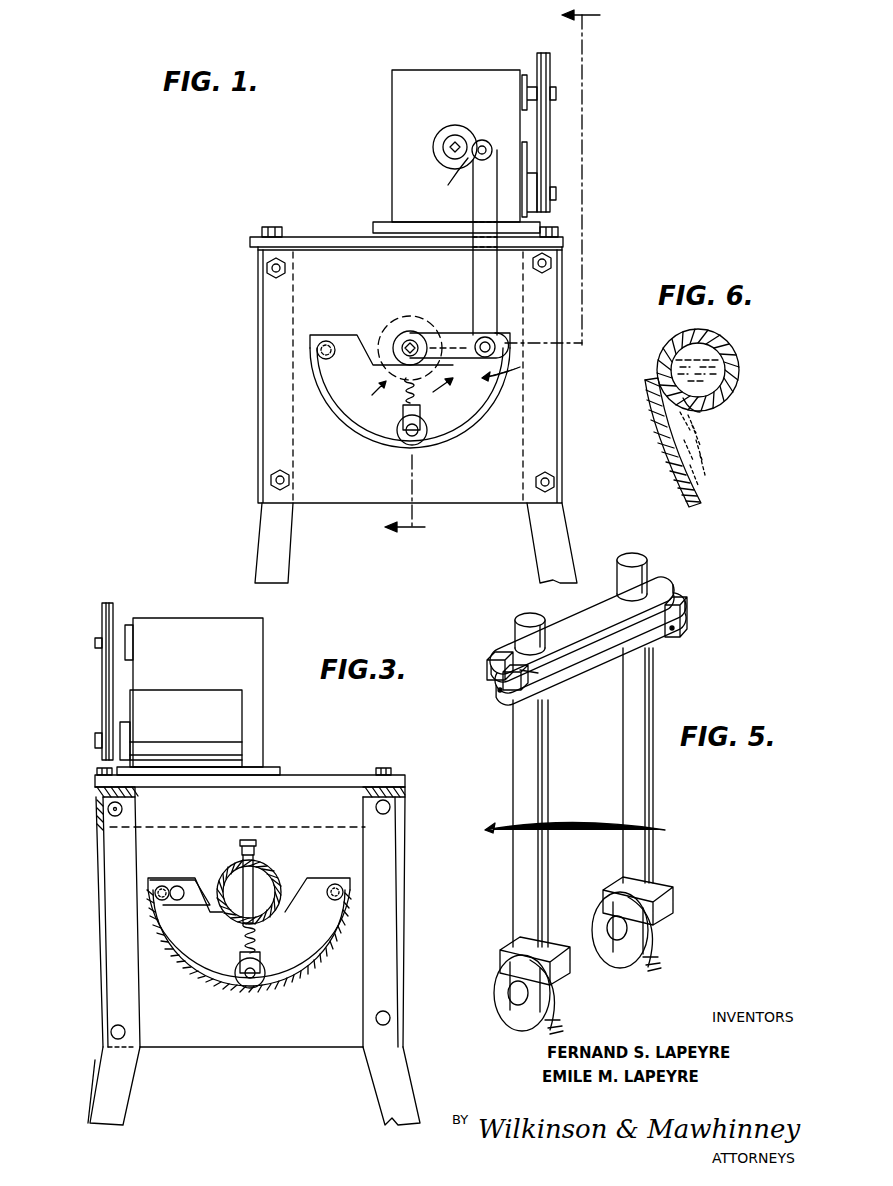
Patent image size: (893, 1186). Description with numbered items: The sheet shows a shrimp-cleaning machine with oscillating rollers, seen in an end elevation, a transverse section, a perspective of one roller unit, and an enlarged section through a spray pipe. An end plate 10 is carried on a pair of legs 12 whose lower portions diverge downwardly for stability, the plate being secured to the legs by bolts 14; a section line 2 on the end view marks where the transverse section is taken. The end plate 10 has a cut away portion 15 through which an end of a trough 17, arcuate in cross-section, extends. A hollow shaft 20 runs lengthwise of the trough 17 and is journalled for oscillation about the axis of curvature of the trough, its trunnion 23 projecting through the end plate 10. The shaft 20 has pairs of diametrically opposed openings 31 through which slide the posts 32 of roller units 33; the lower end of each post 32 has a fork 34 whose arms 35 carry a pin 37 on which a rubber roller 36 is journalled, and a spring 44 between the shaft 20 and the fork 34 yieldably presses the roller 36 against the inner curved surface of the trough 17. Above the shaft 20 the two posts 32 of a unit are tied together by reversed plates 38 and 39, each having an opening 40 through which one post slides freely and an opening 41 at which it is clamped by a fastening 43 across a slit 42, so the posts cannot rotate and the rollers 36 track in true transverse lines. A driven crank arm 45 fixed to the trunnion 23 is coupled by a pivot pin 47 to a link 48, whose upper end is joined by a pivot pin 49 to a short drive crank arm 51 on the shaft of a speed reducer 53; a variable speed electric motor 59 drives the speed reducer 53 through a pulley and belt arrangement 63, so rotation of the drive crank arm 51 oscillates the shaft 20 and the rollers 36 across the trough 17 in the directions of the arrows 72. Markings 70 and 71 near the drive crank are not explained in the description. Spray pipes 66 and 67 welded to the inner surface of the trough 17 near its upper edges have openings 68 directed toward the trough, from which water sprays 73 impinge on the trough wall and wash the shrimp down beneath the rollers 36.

In FIG. 1, the section line 2- 2 is at (501, 273).
In FIG. 1, the end plate 10 is at (510, 493).
In FIG. 3, the end plate 10 is at (341, 808).
In FIG. 1, the legs 12 is at (278, 552).
In FIG. 3, the legs 12 is at (120, 1086).
In FIG. 1, the bolts 14 is at (267, 268).
In FIG. 1, the cut away portion 15 is at (452, 422).
In FIG. 1, the trough 17 is at (372, 440).
In FIG. 6, the trough 17 is at (658, 438).
In FIG. 3, the trough 17 is at (188, 973).
In FIG. 3, the shaft 20 is at (220, 882).
In FIG. 1, the trunnion 23 is at (410, 331).
In FIG. 3, the openings 31 is at (258, 848).
In FIG. 3, the post 32 is at (253, 883).
In FIG. 5, the post 32 is at (632, 776).
In FIG. 5, the roller unit 33 is at (600, 831).
In FIG. 5, the fork 34 is at (558, 947).
In FIG. 3, the arms 35 is at (240, 960).
In FIG. 5, the arms 35 is at (570, 983).
In FIG. 3, the rubber rollers 36 is at (266, 970).
In FIG. 5, the rubber rollers 36 is at (580, 1010).
In FIG. 3, the pins 37 is at (262, 952).
In FIG. 5, the pins 37 is at (515, 998).
In FIG. 5, the plate 38 is at (582, 629).
In FIG. 5, the plate 39 is at (590, 690).
In FIG. 5, the opening 40 is at (650, 587).
In FIG. 5, the opening 41 is at (516, 652).
In FIG. 5, the slit 42 is at (500, 680).
In FIG. 5, the fastenings 43 is at (505, 700).
In FIG. 3, the springs 44 is at (242, 940).
In FIG. 1, the driven crank arm 45 is at (453, 333).
In FIG. 3, the driven crank arm 45 is at (185, 903).
In FIG. 1, the pivot pin 47 is at (495, 342).
In FIG. 1, the link 48 is at (473, 266).
In FIG. 1, the pivot pin 49 is at (490, 140).
In FIG. 1, the drive crank arm 51 is at (445, 186).
In FIG. 1, the speed reducer 53 is at (392, 181).
In FIG. 3, the speed reducer 53 is at (198, 696).
In FIG. 1, the variable speed electric motor 59 is at (525, 162).
In FIG. 3, the variable speed electric motor 59 is at (181, 696).
In FIG. 1, the pulley and belt arrangement 63 is at (548, 150).
In FIG. 3, the pulley and belt arrangement 63 is at (104, 697).
In FIG. 1, the spray pipe 66 is at (328, 341).
In FIG. 3, the spray pipe 66 is at (338, 884).
In FIG. 6, the spray pipe 67 is at (728, 343).
In FIG. 3, the spray pipe 67 is at (162, 885).
In FIG. 6, the openings 68 is at (702, 412).
In FIG. 1, the pulley 70 is at (453, 120).
In FIG. 1, the direction arrow 71 is at (545, 367).
In FIG. 1, the arrows 72 is at (414, 396).
In FIG. 6, the water sprays 73 is at (712, 468).